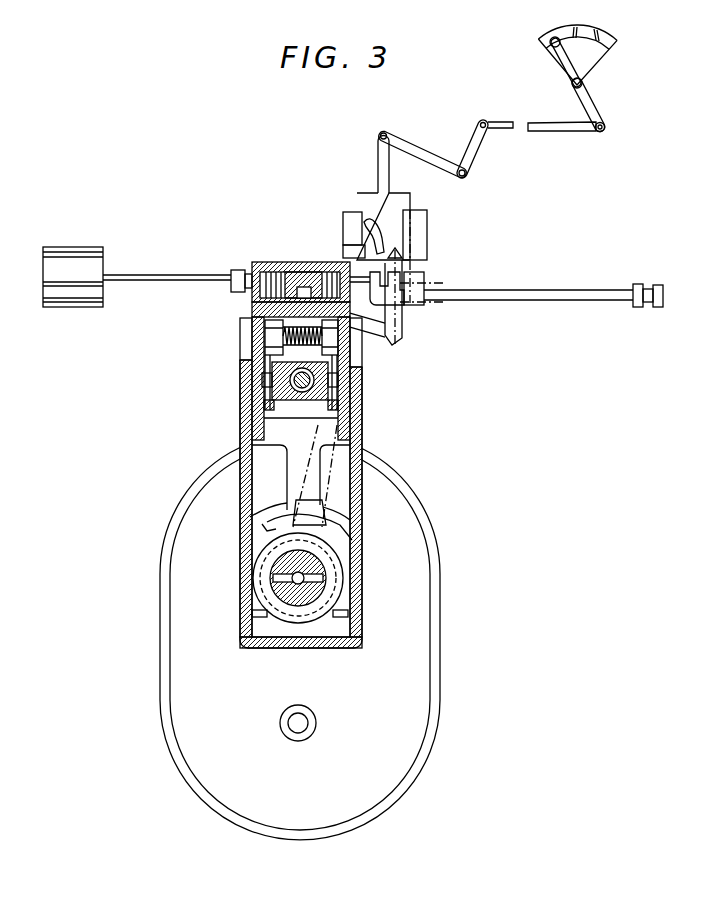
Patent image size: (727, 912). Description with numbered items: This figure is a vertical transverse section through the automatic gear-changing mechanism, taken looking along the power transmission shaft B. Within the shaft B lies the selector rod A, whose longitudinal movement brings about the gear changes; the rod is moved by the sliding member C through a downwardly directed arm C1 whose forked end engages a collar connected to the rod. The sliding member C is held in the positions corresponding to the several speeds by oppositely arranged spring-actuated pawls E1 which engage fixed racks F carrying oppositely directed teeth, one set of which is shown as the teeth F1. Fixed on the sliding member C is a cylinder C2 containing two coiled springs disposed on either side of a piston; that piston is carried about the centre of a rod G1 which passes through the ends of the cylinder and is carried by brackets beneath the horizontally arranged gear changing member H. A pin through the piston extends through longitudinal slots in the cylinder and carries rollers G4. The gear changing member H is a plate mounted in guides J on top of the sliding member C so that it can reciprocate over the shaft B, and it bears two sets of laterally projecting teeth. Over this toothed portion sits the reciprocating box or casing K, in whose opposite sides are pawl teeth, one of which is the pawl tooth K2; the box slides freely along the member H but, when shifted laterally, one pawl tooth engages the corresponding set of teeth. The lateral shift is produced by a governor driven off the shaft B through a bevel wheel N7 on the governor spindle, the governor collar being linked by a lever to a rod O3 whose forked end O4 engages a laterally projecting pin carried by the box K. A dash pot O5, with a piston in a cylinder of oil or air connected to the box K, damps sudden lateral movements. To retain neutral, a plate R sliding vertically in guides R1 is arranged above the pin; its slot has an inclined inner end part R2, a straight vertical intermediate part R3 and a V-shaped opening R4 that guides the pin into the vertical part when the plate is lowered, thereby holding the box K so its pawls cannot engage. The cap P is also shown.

The selector rod A is at (328, 560).
The power transmission shaft B is at (340, 532).
The sliding member C is at (355, 404).
The downwardly directed arm C1 is at (300, 468).
The cylinder C2 is at (344, 417).
The spring-actuated pawls E1 is at (273, 343).
The fixed racks F is at (337, 365).
The rack teeth F1 is at (332, 347).
The rod G1 is at (247, 407).
The rollers G4 is at (252, 377).
The gear changing member H is at (257, 314).
The guides J is at (252, 303).
The box or casing K is at (258, 266).
The pawl tooth K2 is at (345, 297).
The bevel wheel N7 is at (407, 300).
The rod O3 is at (611, 292).
The forked end O4 is at (397, 273).
The dash pot O5 is at (69, 292).
The cap P is at (298, 272).
The plate R is at (372, 200).
The guides R1 is at (348, 215).
The inclined inner end part R2 is at (373, 232).
The straight vertical intermediate part R3 is at (353, 243).
The V-shaped opening R4 is at (393, 252).